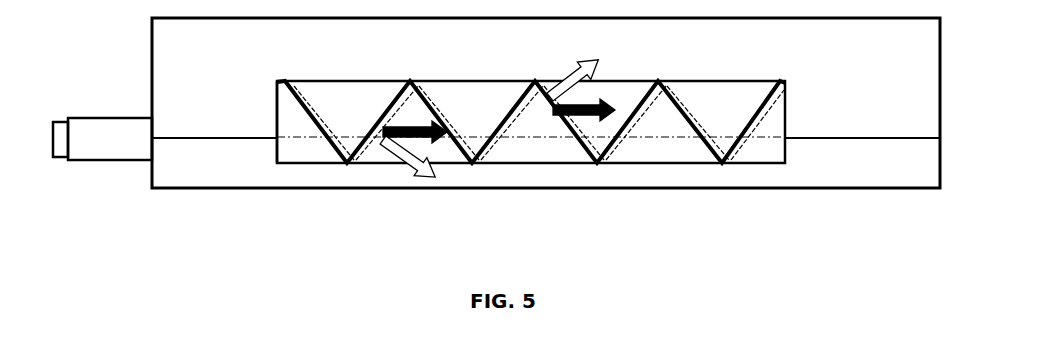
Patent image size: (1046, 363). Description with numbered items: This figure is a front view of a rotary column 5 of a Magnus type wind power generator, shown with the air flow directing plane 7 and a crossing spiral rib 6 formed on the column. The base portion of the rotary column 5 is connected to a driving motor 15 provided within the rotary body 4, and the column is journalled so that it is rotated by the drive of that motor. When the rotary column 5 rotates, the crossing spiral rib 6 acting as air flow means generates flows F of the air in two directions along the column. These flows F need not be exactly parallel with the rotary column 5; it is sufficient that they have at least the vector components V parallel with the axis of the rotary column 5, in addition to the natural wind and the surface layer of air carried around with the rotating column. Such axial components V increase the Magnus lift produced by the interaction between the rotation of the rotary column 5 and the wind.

The rotary body 4 is at (60, 157).
The rotary column 5 is at (750, 93).
The rib 6 is at (623, 152).
The air flow directing plane 7 is at (216, 63).
The driving motor 15 is at (277, 123).
The flow components V is at (397, 121).
The air flows F is at (567, 67).